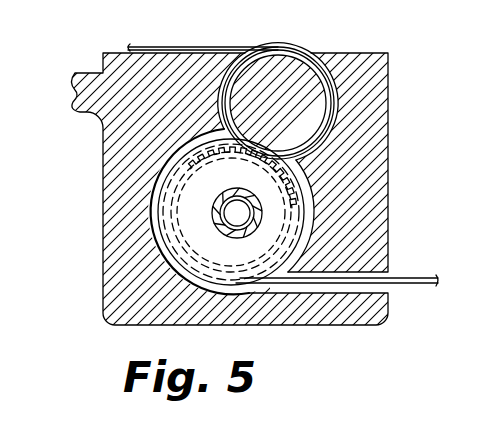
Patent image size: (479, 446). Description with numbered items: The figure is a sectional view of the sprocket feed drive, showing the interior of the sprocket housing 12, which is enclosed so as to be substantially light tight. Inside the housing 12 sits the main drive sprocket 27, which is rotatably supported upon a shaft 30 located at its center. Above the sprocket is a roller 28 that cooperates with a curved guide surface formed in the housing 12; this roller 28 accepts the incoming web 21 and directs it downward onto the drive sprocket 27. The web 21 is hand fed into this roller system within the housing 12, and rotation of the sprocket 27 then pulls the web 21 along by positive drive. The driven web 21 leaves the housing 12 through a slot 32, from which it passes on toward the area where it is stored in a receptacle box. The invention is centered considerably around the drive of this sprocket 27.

The sprocket housing 12 is at (388, 126).
The web 21 is at (211, 47).
The drive sprocket 27 is at (263, 173).
The roller 28 is at (306, 70).
The shaft 30 is at (258, 212).
The slot 32 is at (389, 293).